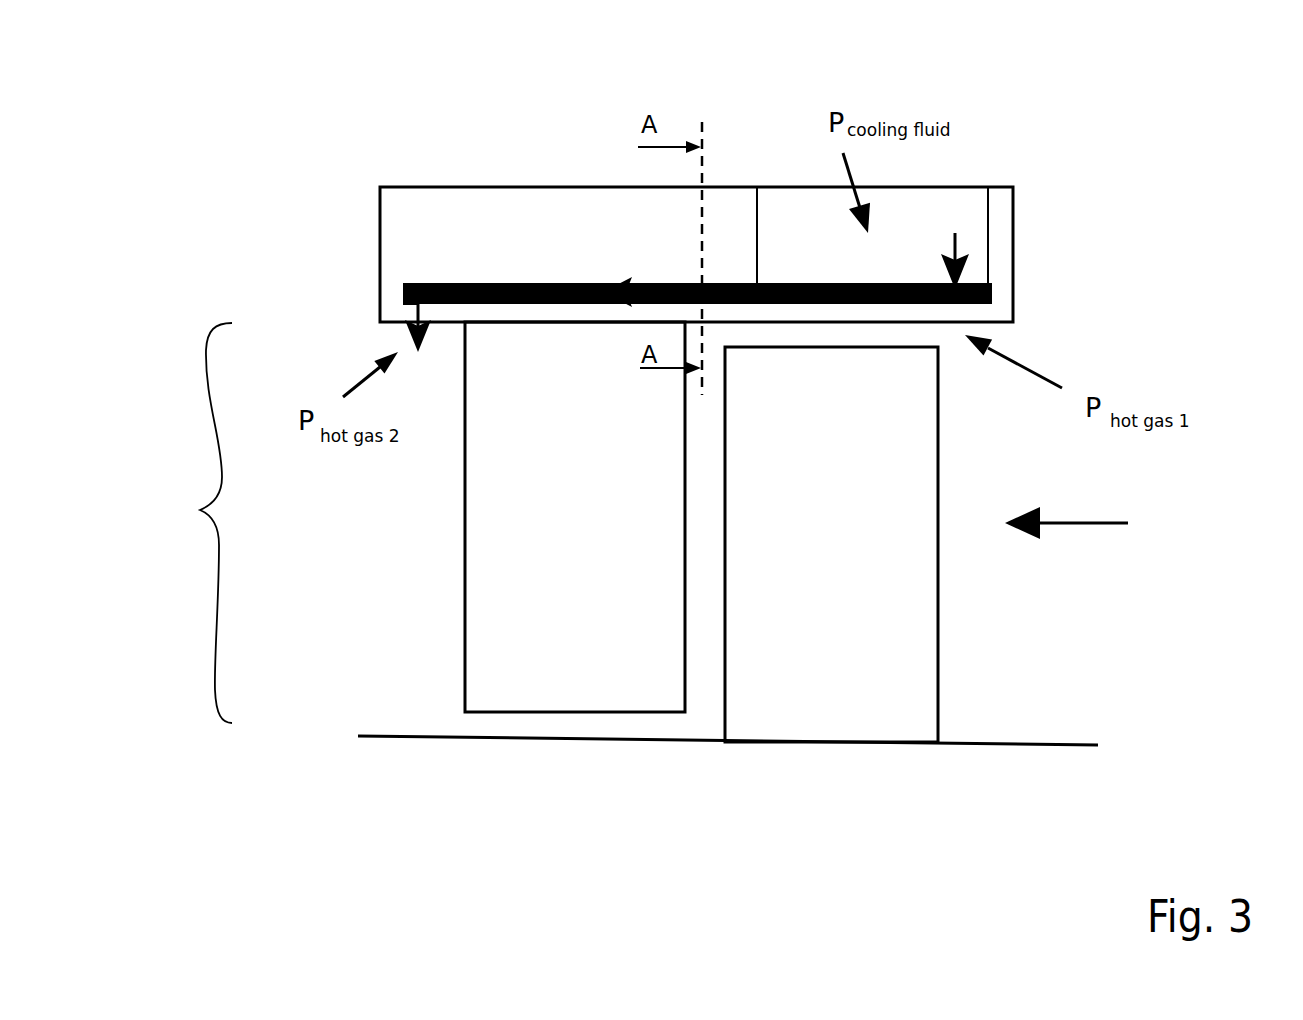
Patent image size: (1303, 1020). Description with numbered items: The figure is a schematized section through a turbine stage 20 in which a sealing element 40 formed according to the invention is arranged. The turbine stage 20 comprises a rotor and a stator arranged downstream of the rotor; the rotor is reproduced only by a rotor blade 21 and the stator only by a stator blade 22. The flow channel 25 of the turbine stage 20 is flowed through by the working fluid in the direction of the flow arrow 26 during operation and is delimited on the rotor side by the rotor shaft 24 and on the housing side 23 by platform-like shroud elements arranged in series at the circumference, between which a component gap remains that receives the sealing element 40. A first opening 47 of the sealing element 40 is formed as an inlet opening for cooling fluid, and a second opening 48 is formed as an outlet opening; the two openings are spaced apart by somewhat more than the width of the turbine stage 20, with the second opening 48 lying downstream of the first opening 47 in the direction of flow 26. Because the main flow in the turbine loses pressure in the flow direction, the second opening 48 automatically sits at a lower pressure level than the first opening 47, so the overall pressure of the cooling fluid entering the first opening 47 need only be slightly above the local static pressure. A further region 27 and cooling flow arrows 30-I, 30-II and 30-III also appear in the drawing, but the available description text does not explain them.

The turbine stage 20 is at (328, 151).
The rotor blade 21 is at (848, 549).
The stator blade 22 is at (591, 548).
The housing side 23 is at (556, 245).
The rotor shaft 24 is at (718, 740).
The flow channel 25 is at (200, 510).
The flow arrow 26 is at (1075, 524).
The second cavity 27 is at (835, 254).
The first cooling flow section 30-I is at (960, 245).
The second cooling flow section 30-II is at (636, 290).
The third cooling flow section 30-III is at (430, 322).
The sealing element 40 is at (493, 283).
The first opening 47 is at (975, 282).
The second opening 48 is at (413, 303).